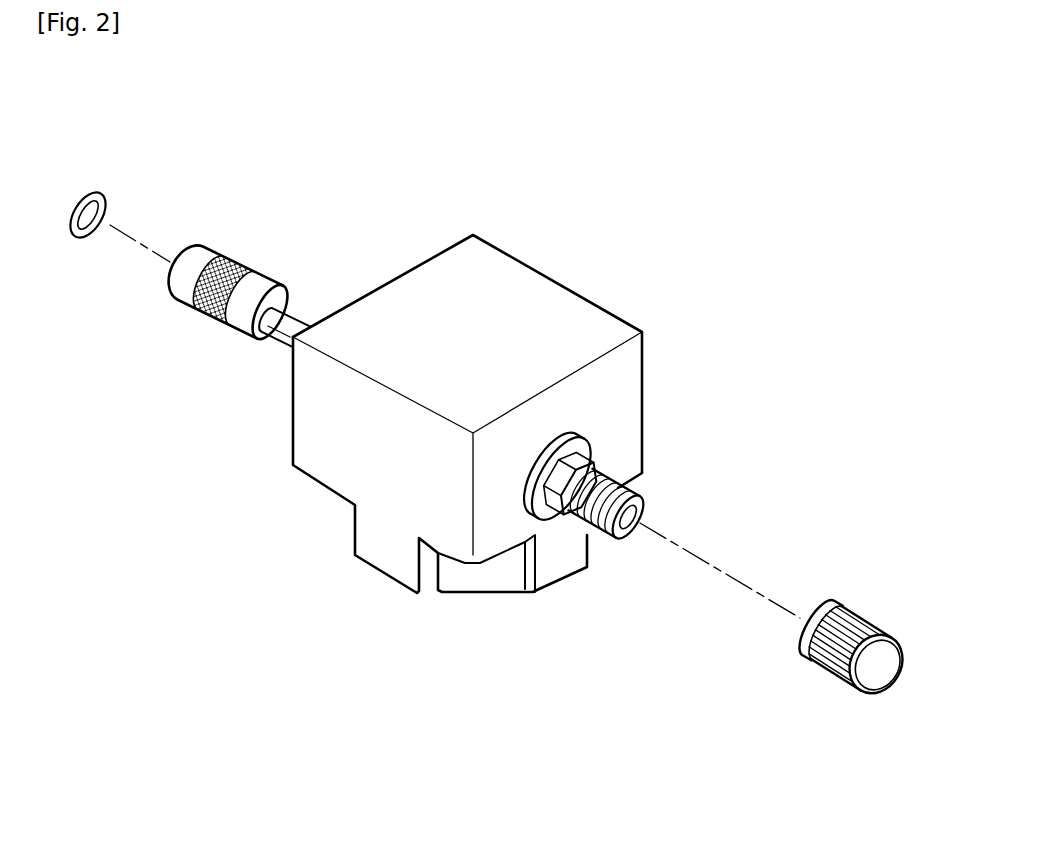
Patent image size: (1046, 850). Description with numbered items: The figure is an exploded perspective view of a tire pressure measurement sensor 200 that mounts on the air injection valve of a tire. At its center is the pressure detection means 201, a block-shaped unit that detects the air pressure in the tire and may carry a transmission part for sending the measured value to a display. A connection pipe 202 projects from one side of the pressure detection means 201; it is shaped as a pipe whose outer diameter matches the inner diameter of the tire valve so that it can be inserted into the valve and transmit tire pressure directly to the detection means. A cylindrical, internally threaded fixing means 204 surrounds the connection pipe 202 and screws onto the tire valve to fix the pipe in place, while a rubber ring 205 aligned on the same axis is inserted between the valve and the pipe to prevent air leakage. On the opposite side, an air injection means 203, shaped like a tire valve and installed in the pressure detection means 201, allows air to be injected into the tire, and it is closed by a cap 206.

The tire pressure measurement sensor 200 is at (313, 98).
The pressure detection means 201 is at (537, 293).
The connection pipe 202 is at (294, 318).
The air injection means 203 is at (588, 532).
The fixing means 204 is at (233, 270).
The rubber ring 205 is at (98, 190).
The cap 206 is at (828, 670).